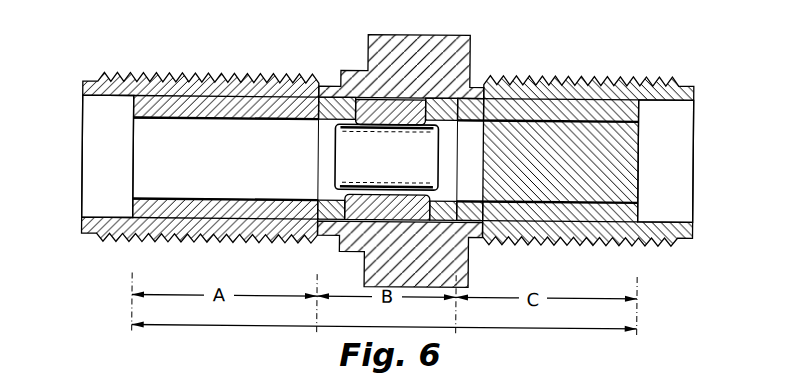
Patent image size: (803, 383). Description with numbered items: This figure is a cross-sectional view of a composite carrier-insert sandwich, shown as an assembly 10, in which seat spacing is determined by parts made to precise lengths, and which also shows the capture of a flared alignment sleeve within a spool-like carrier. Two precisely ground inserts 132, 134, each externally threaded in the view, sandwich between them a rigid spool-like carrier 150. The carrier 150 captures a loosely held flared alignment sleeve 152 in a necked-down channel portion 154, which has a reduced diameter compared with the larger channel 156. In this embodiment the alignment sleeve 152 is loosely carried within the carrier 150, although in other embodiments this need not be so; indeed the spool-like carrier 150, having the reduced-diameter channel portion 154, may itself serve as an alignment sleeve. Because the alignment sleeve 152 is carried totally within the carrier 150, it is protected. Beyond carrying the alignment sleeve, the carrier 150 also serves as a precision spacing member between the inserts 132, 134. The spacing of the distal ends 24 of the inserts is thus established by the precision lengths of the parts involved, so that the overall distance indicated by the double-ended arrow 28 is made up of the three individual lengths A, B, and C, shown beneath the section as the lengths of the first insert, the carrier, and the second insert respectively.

The pipe coupling assembly 10 is at (488, 30).
The distal ends 24 is at (133, 159).
The double-ended arrow 28 is at (380, 327).
The insert 132 is at (234, 93).
The insert 134 is at (577, 97).
The spool-like carrier 150 is at (449, 95).
The flared alignment sleeve 152 is at (368, 168).
The necked-down channel portion 154 is at (356, 124).
The channel 156 is at (325, 165).